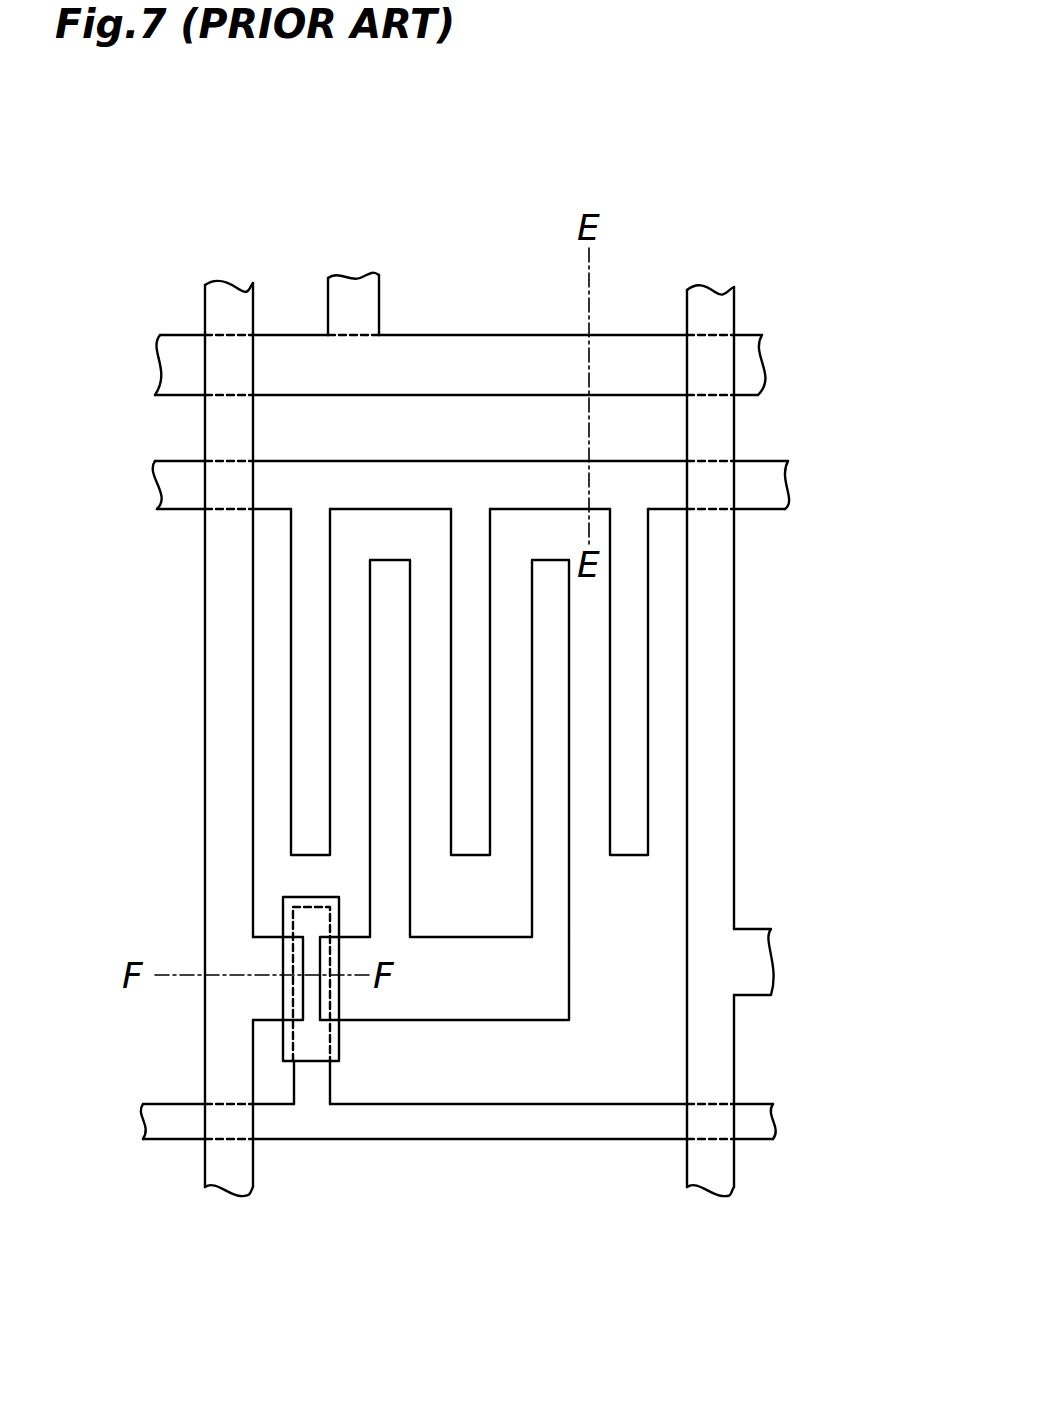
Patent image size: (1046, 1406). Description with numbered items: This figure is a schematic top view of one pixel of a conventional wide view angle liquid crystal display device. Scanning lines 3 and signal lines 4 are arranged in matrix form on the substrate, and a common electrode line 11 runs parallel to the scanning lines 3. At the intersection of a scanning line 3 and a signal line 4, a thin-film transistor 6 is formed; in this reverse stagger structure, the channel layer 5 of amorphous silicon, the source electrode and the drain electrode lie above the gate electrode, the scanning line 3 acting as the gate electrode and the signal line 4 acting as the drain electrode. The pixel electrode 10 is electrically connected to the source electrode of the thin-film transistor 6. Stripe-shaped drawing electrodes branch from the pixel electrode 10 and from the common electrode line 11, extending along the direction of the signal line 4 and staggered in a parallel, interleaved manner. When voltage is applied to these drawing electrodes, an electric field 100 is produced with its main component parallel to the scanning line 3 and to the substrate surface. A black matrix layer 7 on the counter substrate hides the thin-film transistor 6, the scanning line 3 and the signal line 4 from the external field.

The scanning line 3 is at (637, 348).
The signal line 4 is at (795, 1183).
The channel layer 5 is at (322, 1047).
The thin-film transistor 6 is at (267, 916).
The black matrix layer 7 is at (512, 1075).
The pixel electrode 10 is at (437, 983).
The common electrode line 11 is at (352, 490).
The electric field 100 is at (440, 732).